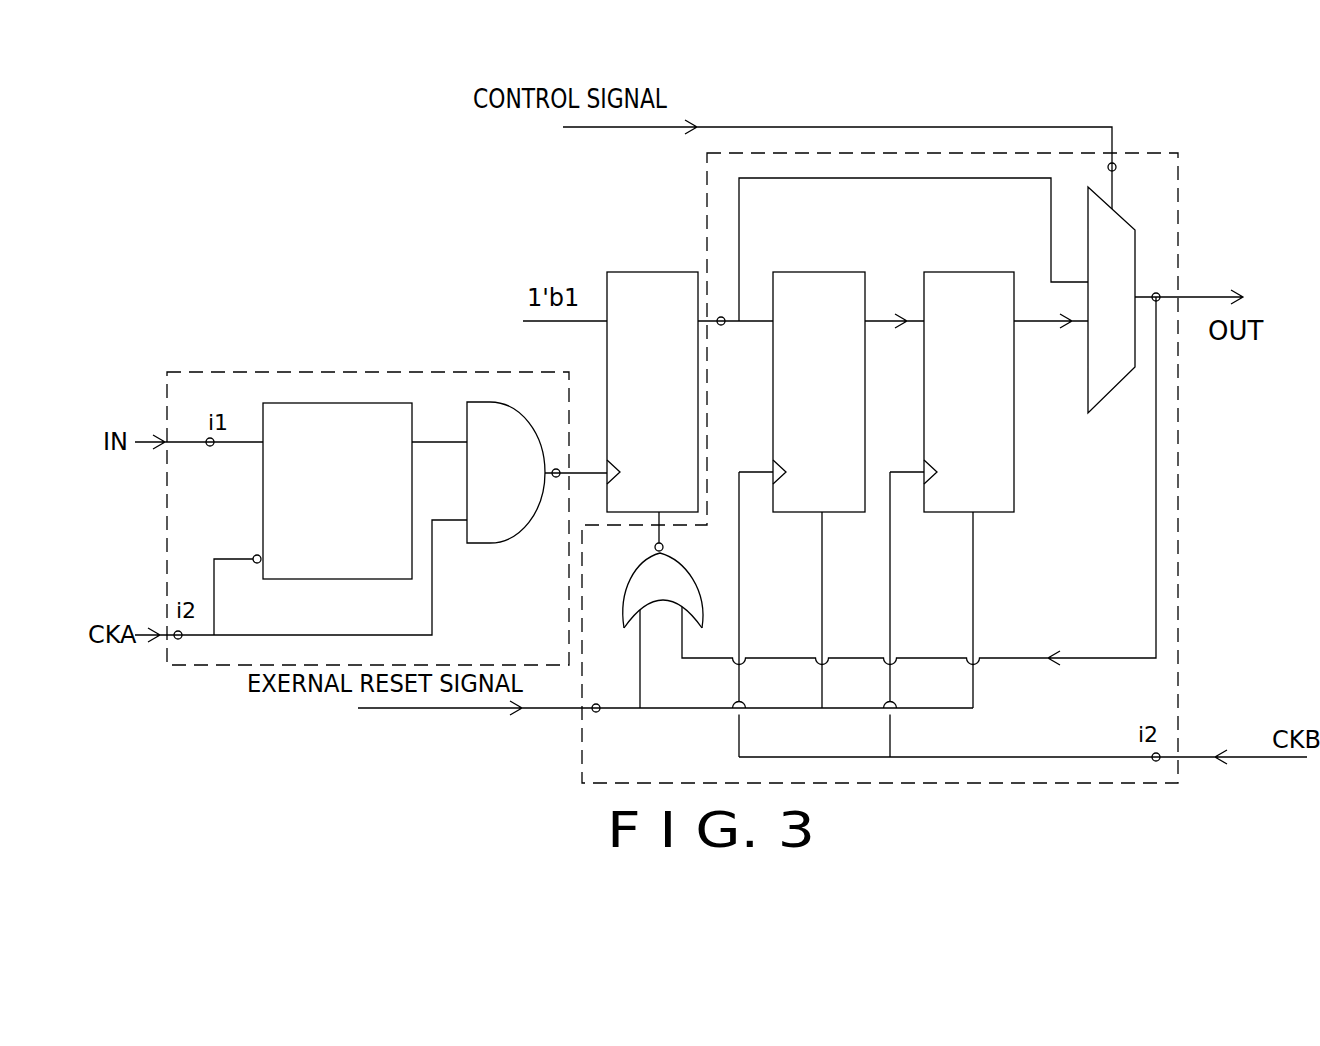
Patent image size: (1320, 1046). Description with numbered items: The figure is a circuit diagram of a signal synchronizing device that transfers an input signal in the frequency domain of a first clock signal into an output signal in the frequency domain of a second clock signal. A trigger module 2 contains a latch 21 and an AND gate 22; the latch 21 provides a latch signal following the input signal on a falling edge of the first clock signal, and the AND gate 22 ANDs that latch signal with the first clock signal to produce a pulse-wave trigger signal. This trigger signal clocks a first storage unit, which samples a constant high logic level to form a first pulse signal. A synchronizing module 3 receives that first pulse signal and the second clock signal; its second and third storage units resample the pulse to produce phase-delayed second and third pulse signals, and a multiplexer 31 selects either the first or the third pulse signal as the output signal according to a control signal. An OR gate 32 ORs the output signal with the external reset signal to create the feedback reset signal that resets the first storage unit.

The trigger module 2 is at (367, 372).
The synchronizing module 3 is at (1150, 152).
The latch 21 is at (288, 403).
The AND gate 22 is at (483, 402).
The multiplexer 31 is at (1108, 390).
The OR gate 32 is at (635, 590).